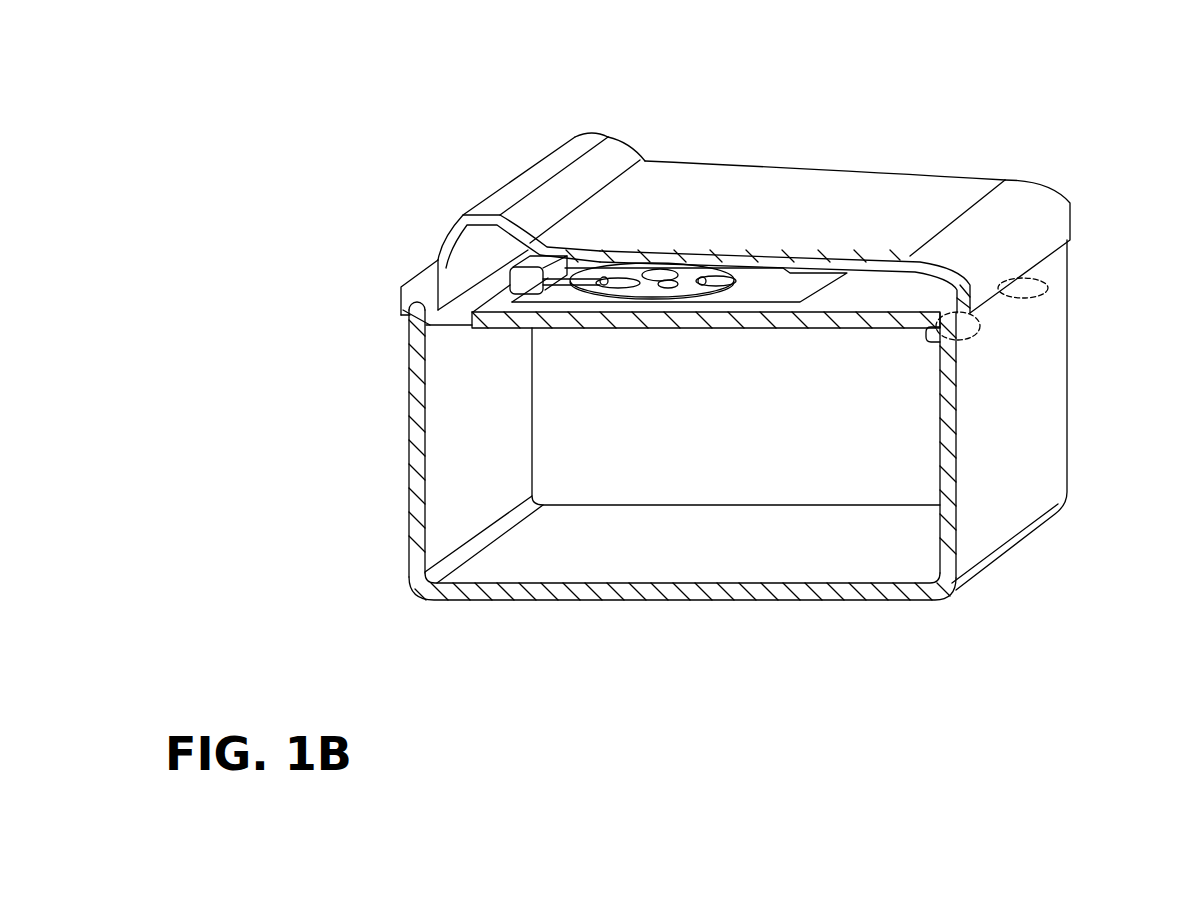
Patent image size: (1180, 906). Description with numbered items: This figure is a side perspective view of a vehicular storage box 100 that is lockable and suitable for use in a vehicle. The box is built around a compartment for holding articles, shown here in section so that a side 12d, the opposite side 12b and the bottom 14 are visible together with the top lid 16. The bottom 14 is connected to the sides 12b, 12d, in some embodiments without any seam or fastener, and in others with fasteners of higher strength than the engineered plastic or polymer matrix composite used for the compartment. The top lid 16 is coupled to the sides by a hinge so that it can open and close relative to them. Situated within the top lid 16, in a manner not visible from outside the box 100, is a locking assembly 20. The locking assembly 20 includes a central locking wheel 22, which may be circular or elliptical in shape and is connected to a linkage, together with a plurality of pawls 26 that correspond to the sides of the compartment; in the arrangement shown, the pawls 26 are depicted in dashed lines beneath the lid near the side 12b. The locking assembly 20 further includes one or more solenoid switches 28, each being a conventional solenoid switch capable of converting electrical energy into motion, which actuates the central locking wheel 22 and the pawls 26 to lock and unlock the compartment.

The vehicular storage box 100 is at (420, 140).
The side 12b is at (1030, 410).
The side 12d is at (403, 446).
The bottom 14 is at (737, 603).
The top lid 16 is at (853, 203).
The locking assembly 20 is at (636, 262).
The central locking wheel 22 is at (653, 296).
The pawls 26 is at (978, 328).
The solenoid switches 28 is at (503, 264).